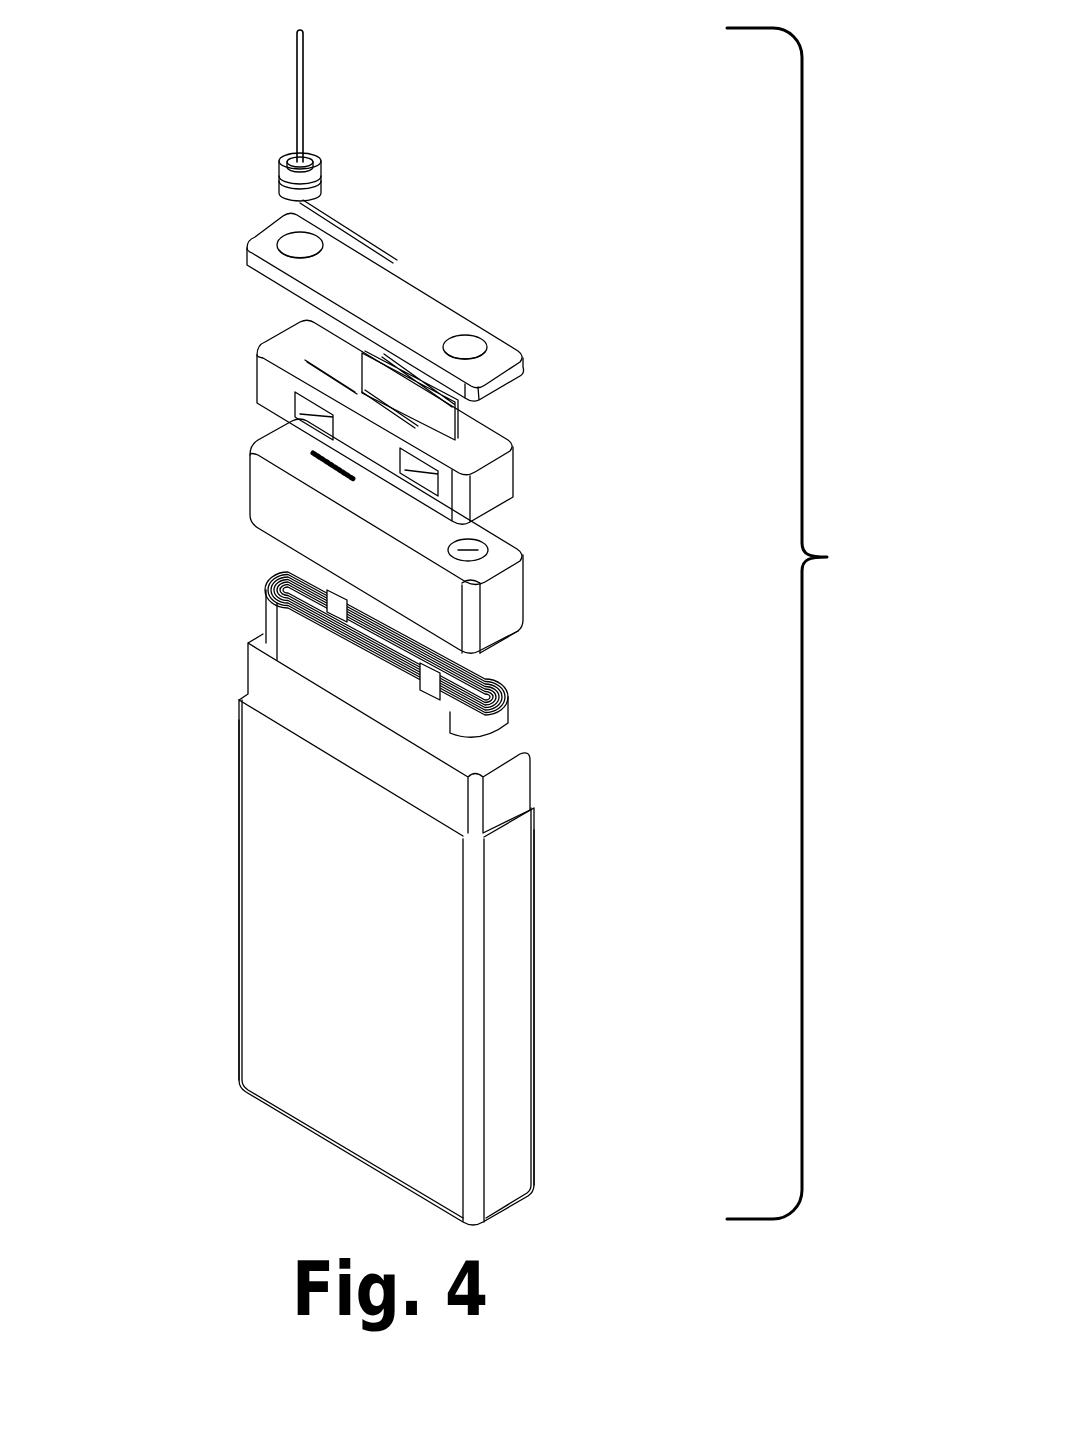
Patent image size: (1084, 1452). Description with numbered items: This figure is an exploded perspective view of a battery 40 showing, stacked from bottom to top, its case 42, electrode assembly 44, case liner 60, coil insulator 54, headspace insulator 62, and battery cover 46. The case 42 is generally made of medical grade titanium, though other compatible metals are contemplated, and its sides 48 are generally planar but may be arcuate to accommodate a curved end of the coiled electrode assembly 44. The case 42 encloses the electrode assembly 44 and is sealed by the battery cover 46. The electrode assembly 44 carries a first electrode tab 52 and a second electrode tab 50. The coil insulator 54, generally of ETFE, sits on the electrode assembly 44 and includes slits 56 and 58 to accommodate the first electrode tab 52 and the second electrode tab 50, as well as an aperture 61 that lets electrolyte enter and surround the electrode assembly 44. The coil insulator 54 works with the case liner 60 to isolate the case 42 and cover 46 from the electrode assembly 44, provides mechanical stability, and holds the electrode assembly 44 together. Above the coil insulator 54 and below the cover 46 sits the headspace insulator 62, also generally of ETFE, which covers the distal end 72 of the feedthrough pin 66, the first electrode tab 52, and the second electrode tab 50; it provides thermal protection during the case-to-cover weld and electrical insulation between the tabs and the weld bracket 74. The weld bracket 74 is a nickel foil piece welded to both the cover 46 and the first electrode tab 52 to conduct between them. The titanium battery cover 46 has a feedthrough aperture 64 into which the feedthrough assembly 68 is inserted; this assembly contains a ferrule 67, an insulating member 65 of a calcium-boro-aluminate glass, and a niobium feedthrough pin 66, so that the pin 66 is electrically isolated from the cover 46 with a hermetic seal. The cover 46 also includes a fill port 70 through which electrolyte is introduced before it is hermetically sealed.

The battery 40 is at (800, 623).
The case 42 is at (508, 932).
The electrode assembly 44 is at (303, 647).
The battery cover 46 is at (383, 295).
The sides 48 is at (261, 918).
The second electrode tab 50 is at (282, 570).
The first electrode tab 52 is at (433, 690).
The coil insulator 54 is at (505, 608).
The slit 56 is at (315, 460).
The slit 58 is at (403, 553).
The case liner 60 is at (510, 783).
The aperture 61 is at (488, 548).
The headspace insulator 62 is at (280, 388).
The feedthrough aperture 64 is at (273, 250).
The insulating member 65 is at (306, 153).
The feedthrough pin 66 is at (303, 80).
The ferrule 67 is at (280, 173).
The feedthrough assembly 68 is at (327, 182).
The fill port 70 is at (470, 337).
The distal end 72 is at (372, 243).
The weld bracket 74 is at (430, 410).